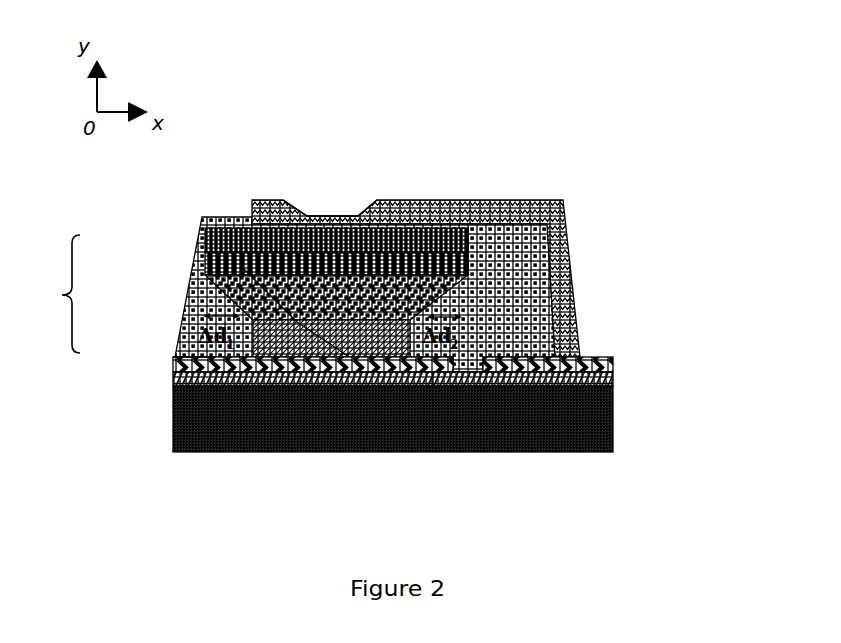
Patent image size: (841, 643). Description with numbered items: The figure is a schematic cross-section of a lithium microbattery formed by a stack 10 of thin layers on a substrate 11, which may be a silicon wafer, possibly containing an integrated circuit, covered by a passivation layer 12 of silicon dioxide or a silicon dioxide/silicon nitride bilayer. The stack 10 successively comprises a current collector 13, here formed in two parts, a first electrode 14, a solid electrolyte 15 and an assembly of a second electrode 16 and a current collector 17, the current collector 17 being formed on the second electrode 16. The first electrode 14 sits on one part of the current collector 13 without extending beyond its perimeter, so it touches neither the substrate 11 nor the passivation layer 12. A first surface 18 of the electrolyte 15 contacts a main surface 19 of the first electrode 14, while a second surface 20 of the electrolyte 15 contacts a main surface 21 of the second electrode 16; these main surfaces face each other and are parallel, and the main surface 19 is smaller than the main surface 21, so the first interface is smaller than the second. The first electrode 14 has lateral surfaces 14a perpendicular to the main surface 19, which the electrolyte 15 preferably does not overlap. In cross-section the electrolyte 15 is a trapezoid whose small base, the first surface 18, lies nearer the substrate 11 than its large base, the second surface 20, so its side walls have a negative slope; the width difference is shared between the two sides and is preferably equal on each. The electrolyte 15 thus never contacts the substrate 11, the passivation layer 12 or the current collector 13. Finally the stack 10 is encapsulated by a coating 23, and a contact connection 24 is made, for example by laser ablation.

The stack 10 is at (53, 294).
The substrate 11 is at (497, 437).
The passivation layer 12 is at (540, 386).
The current collector 13 is at (593, 377).
The first electrode 14 is at (182, 386).
The lateral surface 14a is at (193, 362).
The solid electrolyte 15 is at (250, 297).
The second electrode 16 is at (468, 263).
The current collector 17 is at (217, 245).
The first surface 18 is at (278, 318).
The main surface 19 is at (353, 362).
The second surface 20 is at (433, 380).
The main surface 21 is at (368, 217).
The coating 23 is at (513, 233).
The contact connection 24 is at (458, 198).